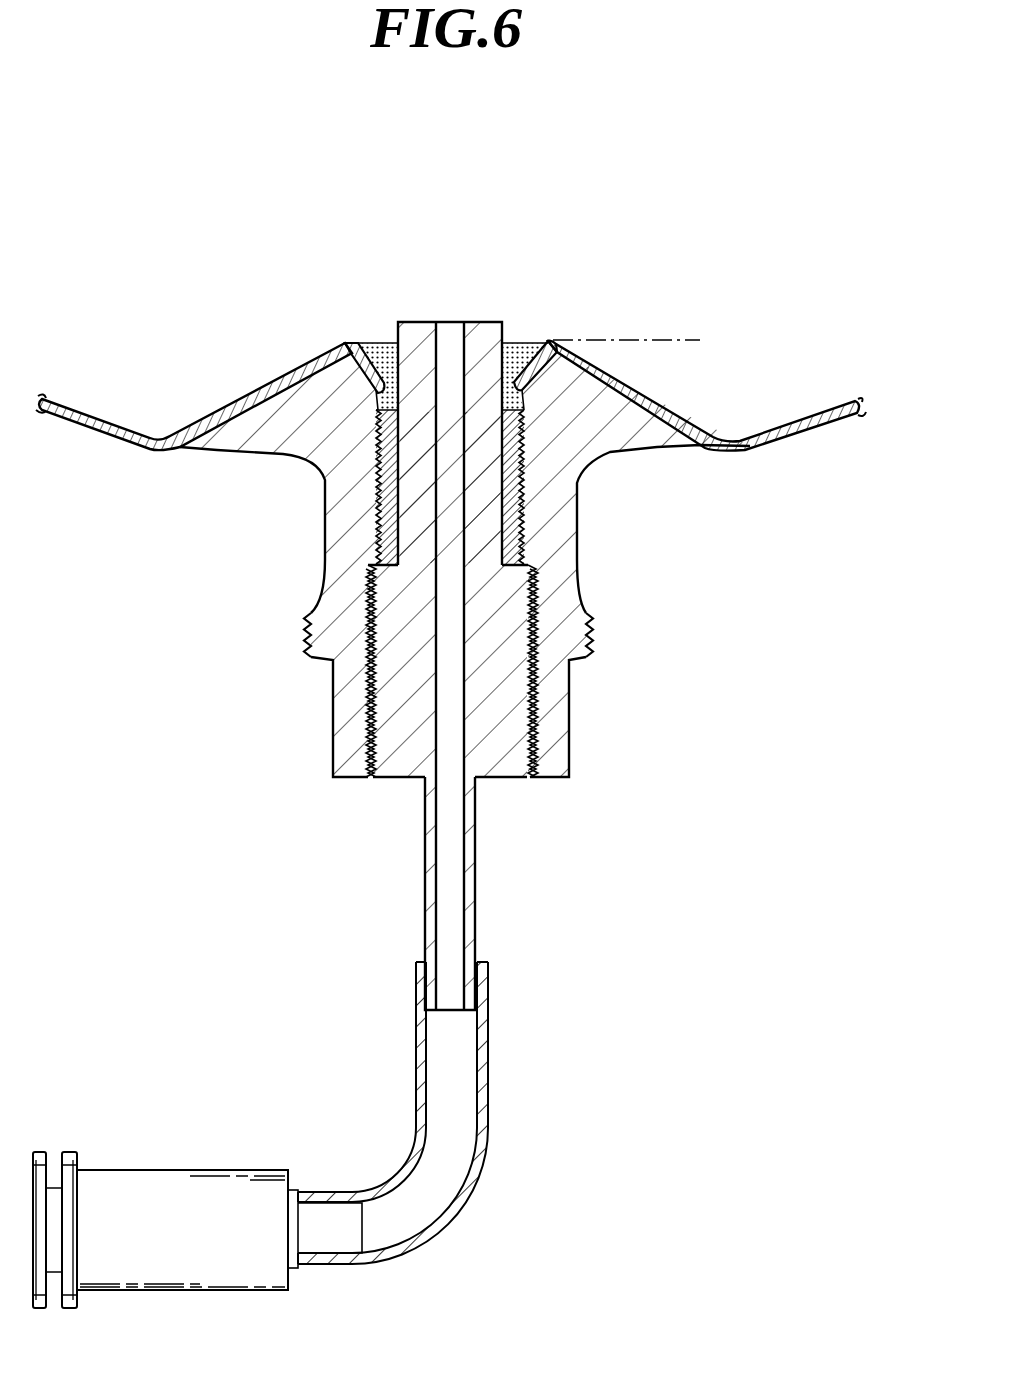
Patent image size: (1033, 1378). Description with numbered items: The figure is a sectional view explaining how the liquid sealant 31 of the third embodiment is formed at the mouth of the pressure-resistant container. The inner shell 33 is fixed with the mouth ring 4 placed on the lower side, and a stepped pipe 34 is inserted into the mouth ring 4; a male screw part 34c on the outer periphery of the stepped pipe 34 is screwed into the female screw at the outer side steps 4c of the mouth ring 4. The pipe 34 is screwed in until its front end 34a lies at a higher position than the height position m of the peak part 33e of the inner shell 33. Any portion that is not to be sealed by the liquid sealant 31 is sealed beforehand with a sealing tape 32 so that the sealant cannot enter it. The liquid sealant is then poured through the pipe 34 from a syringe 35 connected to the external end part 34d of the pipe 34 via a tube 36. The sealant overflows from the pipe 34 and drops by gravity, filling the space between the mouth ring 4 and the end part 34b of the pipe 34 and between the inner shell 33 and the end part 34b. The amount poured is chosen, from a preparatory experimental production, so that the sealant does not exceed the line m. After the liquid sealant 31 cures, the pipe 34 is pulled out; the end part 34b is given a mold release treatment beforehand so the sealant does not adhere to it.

The mouth ring 4 is at (465, 569).
The outer side steps of the mouth ring 4c is at (538, 673).
The liquid sealant 31 is at (517, 342).
The sealing tape 32 is at (508, 530).
The inner shell 33 is at (451, 362).
The peak part 33e is at (348, 340).
The stepped pipe 34 is at (513, 629).
The front end of the pipe 34a is at (442, 322).
The end part of the pipe 34b is at (482, 462).
The male screw part 34c is at (508, 605).
The external end part of the pipe 34d is at (478, 900).
The syringe 35 is at (173, 1182).
The tube 36 is at (487, 1163).
The height position of the peak part m is at (663, 340).